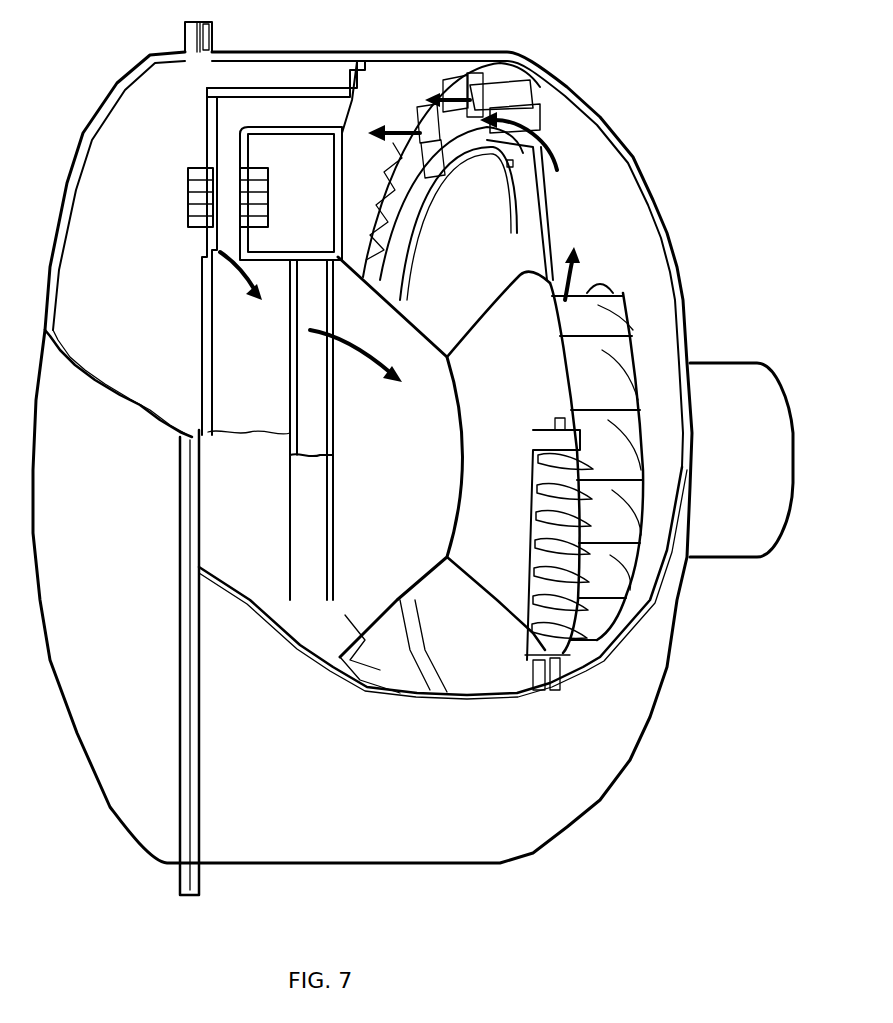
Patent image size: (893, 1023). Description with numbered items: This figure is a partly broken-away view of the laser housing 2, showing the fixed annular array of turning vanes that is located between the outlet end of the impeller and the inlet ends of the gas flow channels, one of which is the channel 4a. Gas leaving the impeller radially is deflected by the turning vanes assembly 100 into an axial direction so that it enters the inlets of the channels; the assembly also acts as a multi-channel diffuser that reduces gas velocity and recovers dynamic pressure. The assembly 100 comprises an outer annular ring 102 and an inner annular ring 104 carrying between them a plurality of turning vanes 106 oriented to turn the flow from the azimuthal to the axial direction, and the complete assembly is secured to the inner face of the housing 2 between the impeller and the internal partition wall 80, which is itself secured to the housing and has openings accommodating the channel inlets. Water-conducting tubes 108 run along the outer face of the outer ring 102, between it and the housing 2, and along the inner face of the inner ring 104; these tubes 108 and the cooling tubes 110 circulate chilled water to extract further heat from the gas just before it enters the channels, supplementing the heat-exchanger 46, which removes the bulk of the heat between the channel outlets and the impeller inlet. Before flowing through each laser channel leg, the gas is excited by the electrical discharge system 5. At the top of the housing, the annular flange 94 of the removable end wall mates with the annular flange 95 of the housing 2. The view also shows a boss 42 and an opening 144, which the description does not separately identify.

The housing 2 is at (283, 52).
The gas flow channel 4a is at (275, 92).
The electrical discharge system 5 is at (175, 199).
The outlet boss 42 is at (737, 380).
The heat-exchanger 46 is at (294, 645).
The internal partition wall 80 is at (340, 192).
The annular flange 94 is at (183, 40).
The annular flange 95 is at (212, 40).
The turning vanes assembly 100 is at (533, 100).
The outer annular ring 102 is at (430, 85).
The inner annular ring 104 is at (447, 140).
The turning vanes 106 is at (463, 87).
The water-conducting tubes 108 is at (560, 682).
The cooling tubes 110 is at (510, 170).
The air outlet opening 144 is at (545, 244).